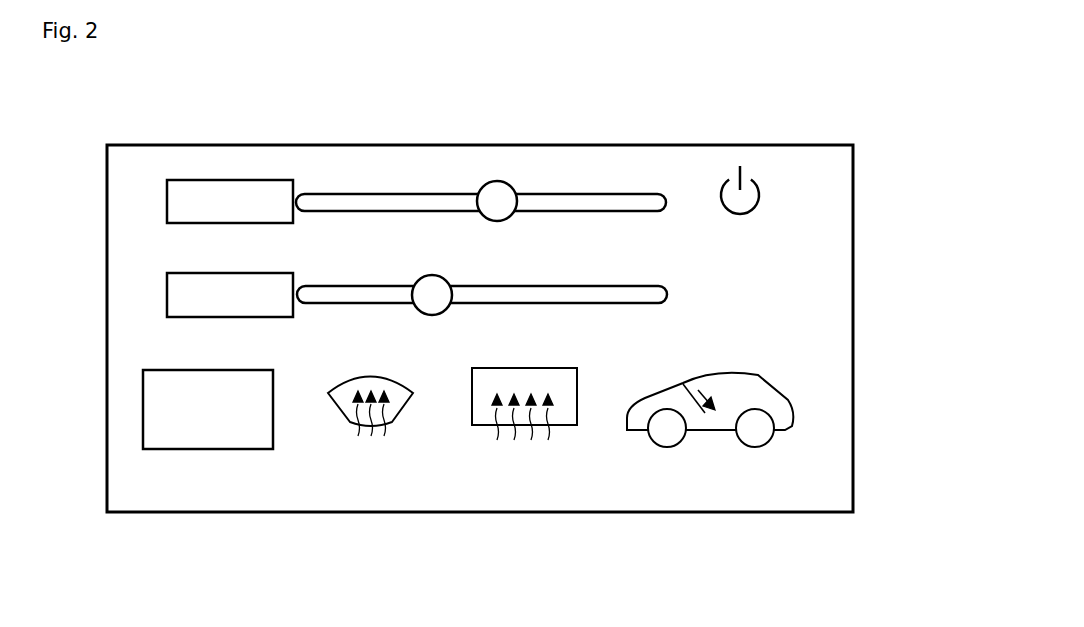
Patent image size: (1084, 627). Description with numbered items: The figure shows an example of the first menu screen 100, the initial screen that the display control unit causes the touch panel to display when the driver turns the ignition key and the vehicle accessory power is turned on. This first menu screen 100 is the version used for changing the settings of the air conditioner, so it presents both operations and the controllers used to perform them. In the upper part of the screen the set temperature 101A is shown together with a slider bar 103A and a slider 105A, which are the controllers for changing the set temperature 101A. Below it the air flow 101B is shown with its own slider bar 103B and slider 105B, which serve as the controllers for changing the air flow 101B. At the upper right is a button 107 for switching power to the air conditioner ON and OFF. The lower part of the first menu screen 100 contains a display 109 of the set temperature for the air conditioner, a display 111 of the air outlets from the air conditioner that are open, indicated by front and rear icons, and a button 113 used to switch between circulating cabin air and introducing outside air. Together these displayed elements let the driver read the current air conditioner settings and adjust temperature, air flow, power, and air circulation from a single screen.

The first menu screen 100 is at (305, 145).
The set temperature 101A is at (167, 199).
The air flow 101B is at (167, 293).
The slider bar 103A is at (633, 192).
The slider bar 103B is at (667, 294).
The slider 105A is at (503, 181).
The slider 105B is at (420, 277).
The button 107 is at (762, 183).
The display of the set temperature 109 is at (196, 450).
The display of air outlets 111 is at (433, 479).
The button 113 is at (700, 462).